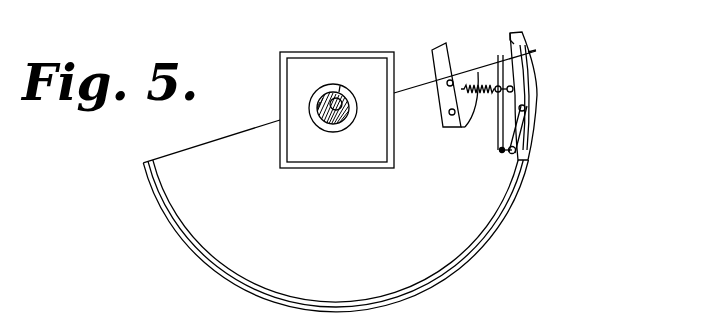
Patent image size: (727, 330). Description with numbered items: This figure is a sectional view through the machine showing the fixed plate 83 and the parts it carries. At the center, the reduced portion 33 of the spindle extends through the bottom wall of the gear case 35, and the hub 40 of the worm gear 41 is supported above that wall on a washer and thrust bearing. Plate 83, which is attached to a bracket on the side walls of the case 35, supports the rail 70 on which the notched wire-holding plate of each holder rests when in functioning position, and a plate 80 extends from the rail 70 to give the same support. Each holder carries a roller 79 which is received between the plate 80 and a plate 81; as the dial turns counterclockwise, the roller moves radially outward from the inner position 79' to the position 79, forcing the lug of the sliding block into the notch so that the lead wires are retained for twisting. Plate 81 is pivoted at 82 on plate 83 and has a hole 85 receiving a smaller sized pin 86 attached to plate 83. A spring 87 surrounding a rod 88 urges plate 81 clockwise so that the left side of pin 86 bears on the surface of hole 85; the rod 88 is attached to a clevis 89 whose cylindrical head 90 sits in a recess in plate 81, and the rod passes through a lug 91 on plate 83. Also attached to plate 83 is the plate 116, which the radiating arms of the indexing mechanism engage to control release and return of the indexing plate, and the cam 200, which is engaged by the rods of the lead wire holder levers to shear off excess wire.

The reduced portion 33 is at (352, 99).
The gear case 35 is at (280, 78).
The hub 40 is at (322, 96).
The worm gear 41 is at (340, 85).
The rail 70 is at (470, 256).
The roller 79 is at (544, 96).
The roller position 79' is at (509, 151).
The plate 80 is at (533, 122).
The plate 81 is at (498, 139).
The pivot 82 is at (501, 153).
The plate 83 is at (237, 135).
The hole 85 is at (496, 109).
The pin 86 is at (527, 76).
The spring 87 is at (477, 86).
The rod 88 is at (462, 128).
The clevis 89 is at (497, 85).
The cylindrical head 90 is at (530, 50).
The lug 91 is at (443, 94).
The plate 116 is at (432, 49).
The cam 200 is at (533, 25).